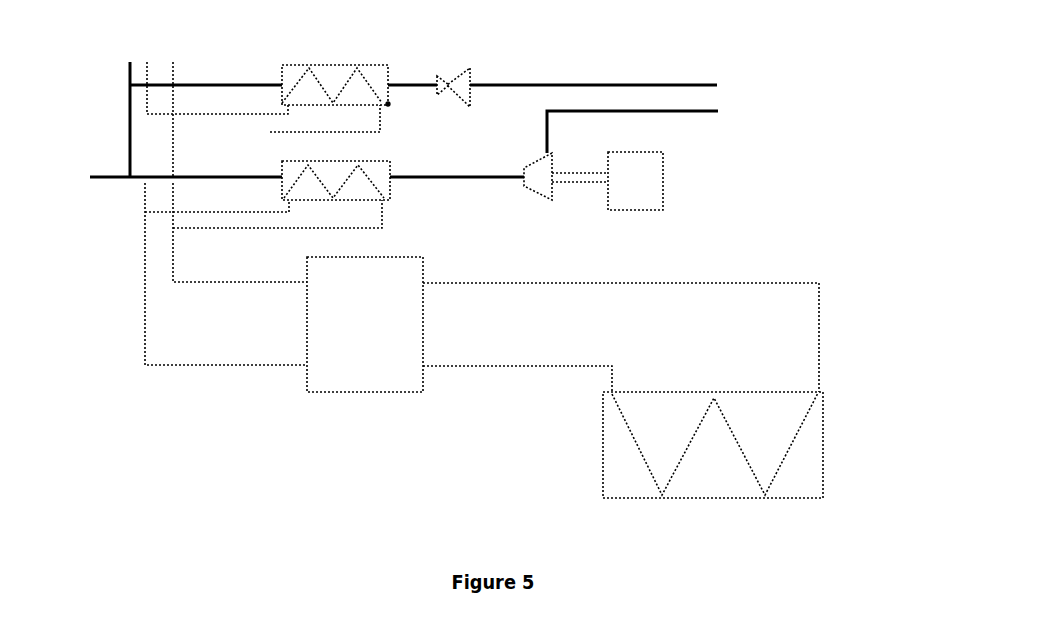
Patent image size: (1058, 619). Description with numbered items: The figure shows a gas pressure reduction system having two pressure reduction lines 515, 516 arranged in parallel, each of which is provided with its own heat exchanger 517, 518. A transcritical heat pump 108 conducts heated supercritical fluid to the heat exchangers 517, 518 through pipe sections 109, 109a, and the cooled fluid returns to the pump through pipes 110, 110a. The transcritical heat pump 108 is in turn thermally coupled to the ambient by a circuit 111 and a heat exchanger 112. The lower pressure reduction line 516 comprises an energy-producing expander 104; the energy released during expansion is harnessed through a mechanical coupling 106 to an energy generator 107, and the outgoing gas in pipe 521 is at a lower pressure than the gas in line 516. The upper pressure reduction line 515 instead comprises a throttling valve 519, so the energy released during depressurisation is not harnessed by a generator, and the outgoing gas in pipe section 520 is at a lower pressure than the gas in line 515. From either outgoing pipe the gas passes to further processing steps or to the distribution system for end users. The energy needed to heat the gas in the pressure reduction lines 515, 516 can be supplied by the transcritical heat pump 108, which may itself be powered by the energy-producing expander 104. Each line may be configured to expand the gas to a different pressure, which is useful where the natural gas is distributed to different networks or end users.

The energy-producing expander 104 is at (537, 190).
The mechanical coupling 106 is at (577, 182).
The energy generator 107 is at (672, 180).
The transcritical heat pump 108 is at (342, 392).
The pipe section 109 is at (224, 282).
The pipe section 109a is at (190, 133).
The pipe 110 is at (177, 367).
The pipe 110a is at (165, 108).
The circuit 111 is at (607, 283).
The heat exchanger 112 is at (825, 462).
The pressure reduction line 515 is at (225, 85).
The pressure reduction line 516 is at (225, 178).
The heat exchanger 517 is at (318, 65).
The heat exchanger 518 is at (377, 157).
The throttling valve 519 is at (460, 72).
The pipe section 520 is at (697, 85).
The pipe 521 is at (718, 111).